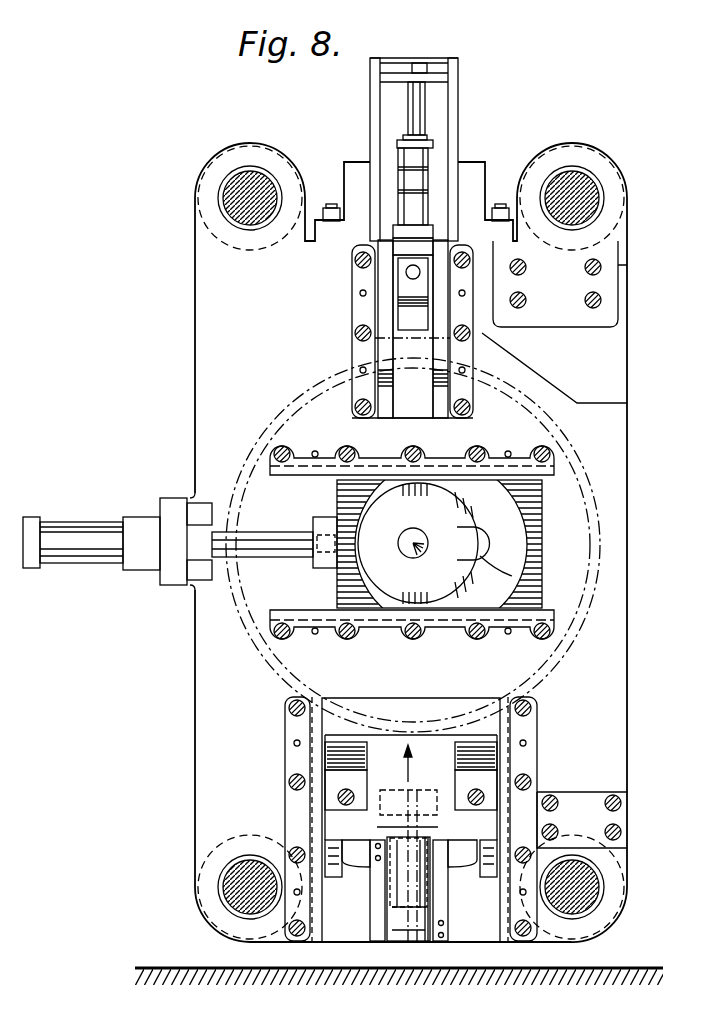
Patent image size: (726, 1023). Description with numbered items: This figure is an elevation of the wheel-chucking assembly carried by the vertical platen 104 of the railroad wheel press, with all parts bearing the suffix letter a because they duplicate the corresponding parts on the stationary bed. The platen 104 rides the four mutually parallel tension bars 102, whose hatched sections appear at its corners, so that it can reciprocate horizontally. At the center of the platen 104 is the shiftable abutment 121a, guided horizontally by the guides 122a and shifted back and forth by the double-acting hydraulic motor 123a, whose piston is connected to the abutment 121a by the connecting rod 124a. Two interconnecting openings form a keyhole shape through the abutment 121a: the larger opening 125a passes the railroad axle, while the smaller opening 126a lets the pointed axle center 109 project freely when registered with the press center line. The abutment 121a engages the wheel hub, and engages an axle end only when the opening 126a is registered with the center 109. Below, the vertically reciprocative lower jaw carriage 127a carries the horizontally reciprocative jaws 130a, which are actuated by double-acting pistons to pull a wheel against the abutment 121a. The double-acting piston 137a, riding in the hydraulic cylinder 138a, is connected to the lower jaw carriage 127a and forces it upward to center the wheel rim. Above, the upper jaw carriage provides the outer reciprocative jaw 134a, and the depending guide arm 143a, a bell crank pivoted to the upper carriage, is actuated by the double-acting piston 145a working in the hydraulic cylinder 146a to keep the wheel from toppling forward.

The tension bars 102 is at (240, 188).
The vertical platen 104 is at (197, 268).
The axle center 109 is at (410, 549).
The abutment 121a is at (538, 505).
The guides 122a is at (525, 456).
The double-acting hydraulic motor 123a is at (75, 538).
The connecting rod 124a is at (252, 545).
The opening 125a is at (388, 508).
The opening 126a is at (503, 573).
The lower jaw carriage 127a is at (428, 758).
The horizontally reciprocative jaws 130a is at (330, 750).
The outer reciprocative jaw 134a is at (398, 305).
The double-acting piston 137a is at (400, 932).
The hydraulic cylinder 138a is at (428, 872).
The depending guide arm 143a is at (440, 378).
The double-acting piston 145a is at (432, 165).
The hydraulic cylinder 146a is at (418, 200).